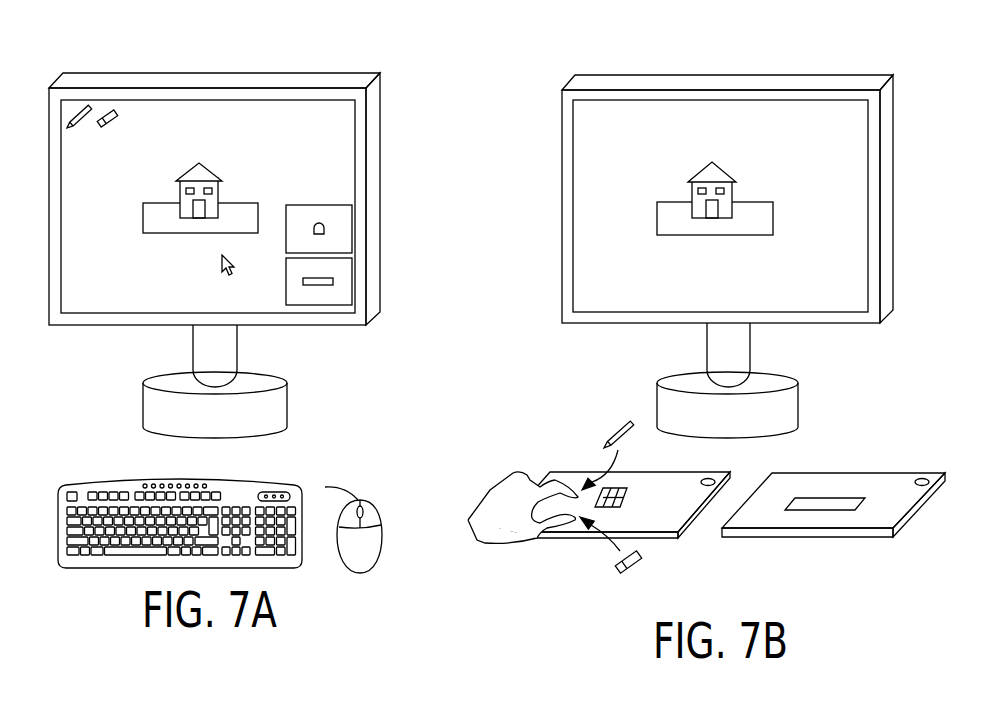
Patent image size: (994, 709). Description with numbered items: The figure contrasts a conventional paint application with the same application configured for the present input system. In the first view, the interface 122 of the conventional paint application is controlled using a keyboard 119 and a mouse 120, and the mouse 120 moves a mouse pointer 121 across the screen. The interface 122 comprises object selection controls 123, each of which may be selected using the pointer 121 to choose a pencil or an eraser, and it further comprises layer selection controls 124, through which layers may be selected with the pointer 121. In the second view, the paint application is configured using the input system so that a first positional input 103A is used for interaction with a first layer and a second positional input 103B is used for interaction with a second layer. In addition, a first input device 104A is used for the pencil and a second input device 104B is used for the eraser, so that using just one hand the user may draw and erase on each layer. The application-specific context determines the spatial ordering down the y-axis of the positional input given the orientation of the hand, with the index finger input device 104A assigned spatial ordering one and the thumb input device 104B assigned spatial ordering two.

In FIG. 7A, the keyboard 119 is at (233, 478).
In FIG. 7A, the mouse 120 is at (362, 502).
In FIG. 7A, the mouse pointer 121 is at (221, 268).
In FIG. 7A, the interface 122 is at (333, 125).
In FIG. 7A, the object selection controls 123 is at (94, 153).
In FIG. 7A, the layer selection controls 124 is at (296, 187).
In FIG. 7B, the first positional input 103A is at (657, 533).
In FIG. 7B, the second positional input 103B is at (863, 530).
In FIG. 7B, the first input device 104A is at (578, 495).
In FIG. 7B, the second input device 104B is at (570, 518).